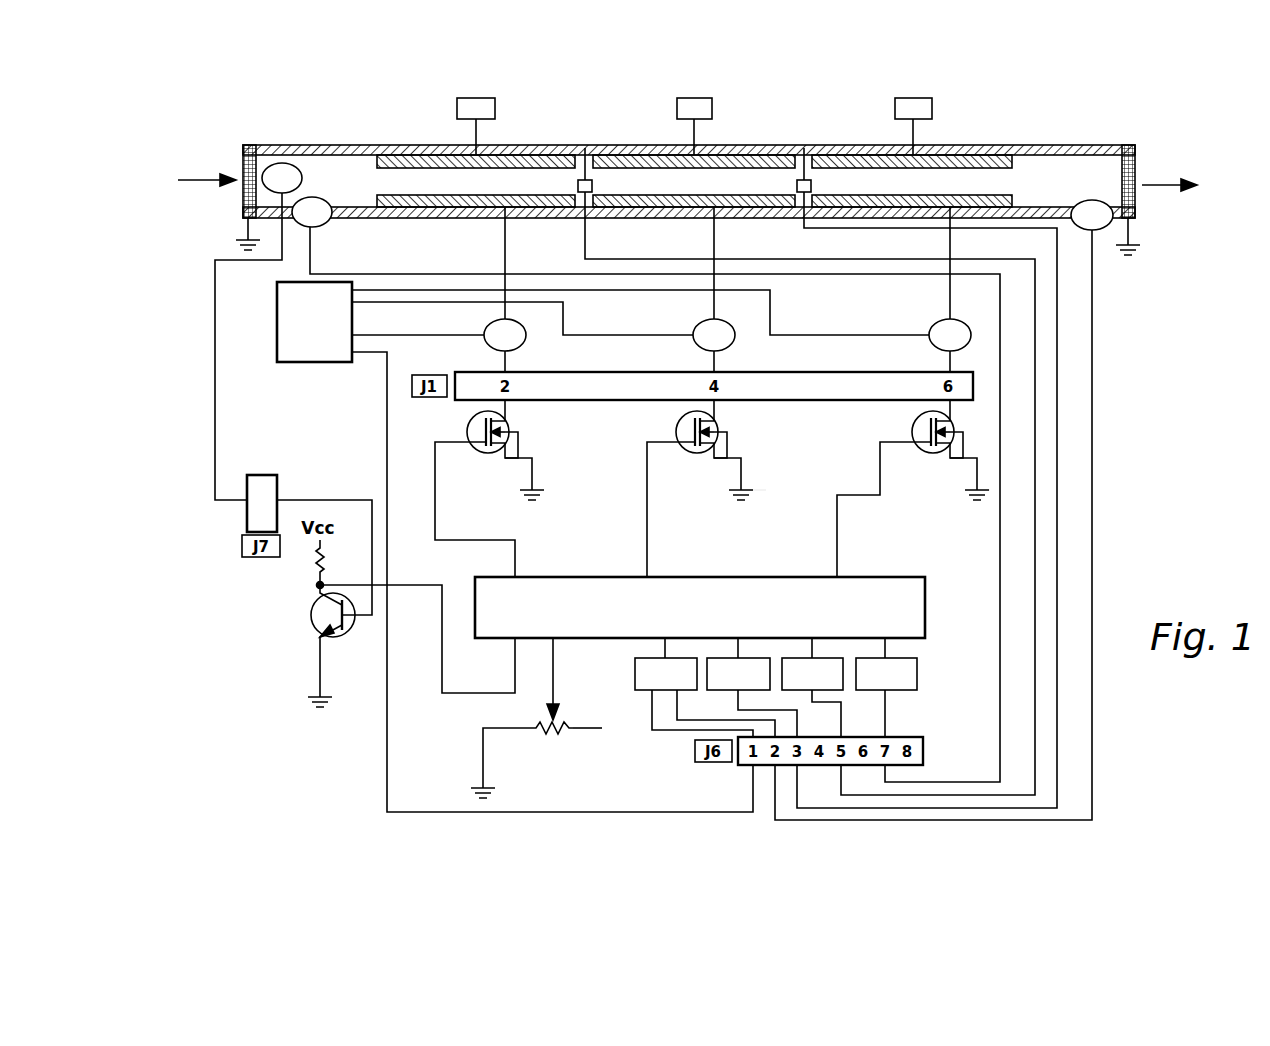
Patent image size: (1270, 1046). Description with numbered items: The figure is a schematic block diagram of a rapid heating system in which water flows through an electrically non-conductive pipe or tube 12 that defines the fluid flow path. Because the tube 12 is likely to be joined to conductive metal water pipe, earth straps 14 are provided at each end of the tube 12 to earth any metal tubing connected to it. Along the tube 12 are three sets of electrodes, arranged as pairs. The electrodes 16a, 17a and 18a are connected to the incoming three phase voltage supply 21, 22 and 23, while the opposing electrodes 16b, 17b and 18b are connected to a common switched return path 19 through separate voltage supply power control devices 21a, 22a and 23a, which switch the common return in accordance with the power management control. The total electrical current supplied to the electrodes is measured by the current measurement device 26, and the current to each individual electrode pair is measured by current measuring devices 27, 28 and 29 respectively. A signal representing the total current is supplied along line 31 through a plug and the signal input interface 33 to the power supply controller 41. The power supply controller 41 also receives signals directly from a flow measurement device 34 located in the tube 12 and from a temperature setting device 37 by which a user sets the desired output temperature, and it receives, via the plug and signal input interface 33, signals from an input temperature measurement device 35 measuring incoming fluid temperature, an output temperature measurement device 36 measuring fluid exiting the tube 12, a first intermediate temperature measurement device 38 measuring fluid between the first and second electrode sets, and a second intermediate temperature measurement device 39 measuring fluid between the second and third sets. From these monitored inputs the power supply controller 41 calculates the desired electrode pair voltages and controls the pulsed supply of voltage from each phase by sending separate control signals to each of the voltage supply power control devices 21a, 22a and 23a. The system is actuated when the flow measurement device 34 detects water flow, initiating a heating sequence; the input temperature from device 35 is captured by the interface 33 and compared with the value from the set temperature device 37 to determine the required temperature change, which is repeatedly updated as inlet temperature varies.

The tube 12 is at (348, 145).
The earth straps 14 is at (245, 233).
The electrode 16a is at (430, 155).
The electrode 16b is at (436, 210).
The electrode 17a is at (737, 155).
The electrode 17b is at (738, 212).
The electrode 18a is at (958, 155).
The electrode 18b is at (978, 212).
The common switched return path 19 is at (540, 497).
The three phase voltage supply 21 is at (456, 100).
The three phase voltage supply 22 is at (677, 105).
The three phase voltage supply 23 is at (895, 105).
The voltage supply power control device 21a is at (508, 432).
The voltage supply power control device 22a is at (718, 432).
The voltage supply power control device 23a is at (912, 432).
The current measurement device 26 is at (302, 362).
The current measuring device 27 is at (526, 340).
The current measuring device 28 is at (735, 340).
The current measuring device 29 is at (934, 327).
The line 31 is at (387, 711).
The signal input interface 33 is at (907, 673).
The flow measurement device 34 is at (274, 162).
The input temperature measurement device 35 is at (330, 224).
The output temperature measurement device 36 is at (1096, 232).
The temperature setting device 37 is at (566, 734).
The first intermediate temperature measurement device 38 is at (585, 148).
The second intermediate temperature measurement device 39 is at (804, 148).
The power supply controller 41 is at (710, 620).